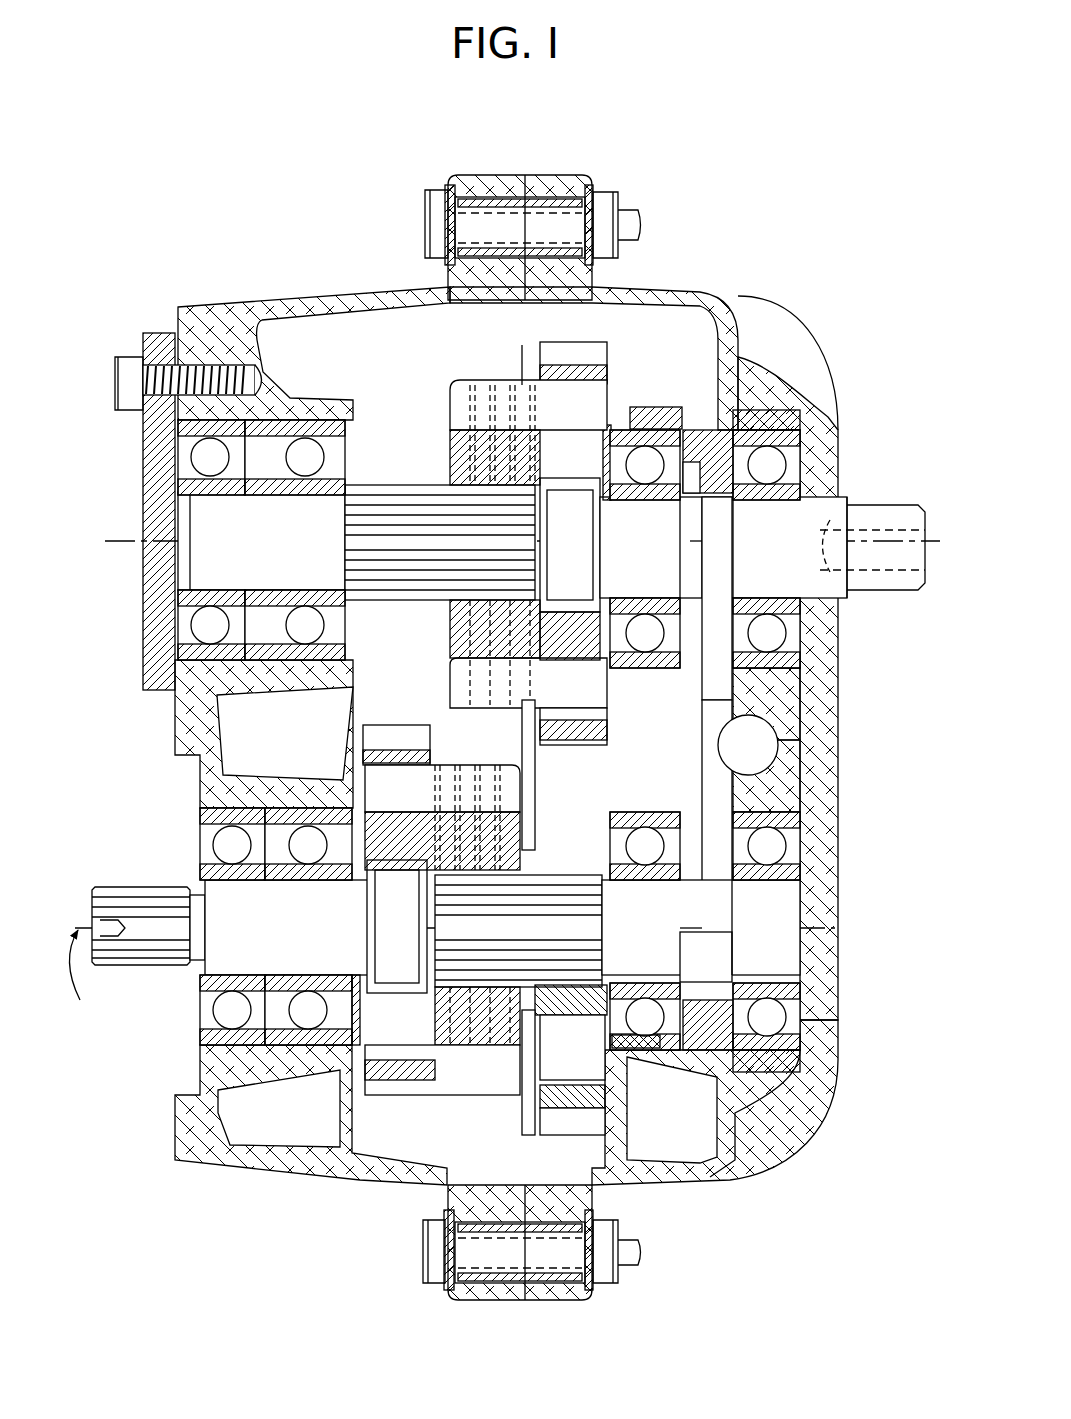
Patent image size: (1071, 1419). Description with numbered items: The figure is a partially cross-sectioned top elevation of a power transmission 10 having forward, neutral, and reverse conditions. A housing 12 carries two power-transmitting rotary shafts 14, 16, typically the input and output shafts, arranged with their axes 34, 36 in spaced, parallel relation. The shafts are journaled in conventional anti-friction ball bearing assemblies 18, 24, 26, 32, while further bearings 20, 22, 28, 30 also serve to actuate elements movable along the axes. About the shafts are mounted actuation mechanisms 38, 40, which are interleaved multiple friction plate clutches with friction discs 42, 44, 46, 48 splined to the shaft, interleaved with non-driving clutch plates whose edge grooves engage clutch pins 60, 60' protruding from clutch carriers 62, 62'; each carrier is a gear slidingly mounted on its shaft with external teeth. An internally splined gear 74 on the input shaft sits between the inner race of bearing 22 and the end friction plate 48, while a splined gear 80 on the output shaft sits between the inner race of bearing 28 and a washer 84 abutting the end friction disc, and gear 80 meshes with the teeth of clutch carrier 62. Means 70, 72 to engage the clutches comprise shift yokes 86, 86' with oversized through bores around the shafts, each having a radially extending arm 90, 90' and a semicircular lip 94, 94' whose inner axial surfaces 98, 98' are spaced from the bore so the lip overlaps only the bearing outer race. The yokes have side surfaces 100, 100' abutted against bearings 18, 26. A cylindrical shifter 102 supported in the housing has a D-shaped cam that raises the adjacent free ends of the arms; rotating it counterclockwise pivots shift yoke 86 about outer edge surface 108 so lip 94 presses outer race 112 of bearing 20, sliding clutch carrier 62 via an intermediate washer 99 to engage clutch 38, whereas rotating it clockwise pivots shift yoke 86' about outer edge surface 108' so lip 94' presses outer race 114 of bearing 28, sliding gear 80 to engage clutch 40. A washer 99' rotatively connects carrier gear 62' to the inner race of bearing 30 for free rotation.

The power transmission 10 is at (490, 170).
The housing 12 is at (712, 312).
The rotary shaft 14 is at (845, 578).
The rotary shaft 16 is at (240, 958).
The anti-friction bearing assembly 18 is at (812, 432).
The bearing 20 is at (740, 425).
The bearing 22 is at (300, 428).
The anti-friction bearing assembly 24 is at (176, 474).
The anti-friction bearing assembly 26 is at (785, 870).
The bearing 28 is at (675, 1040).
The bearing 30 is at (295, 1048).
The anti-friction bearing assembly 32 is at (198, 862).
The axis 34 is at (112, 538).
The axis 36 is at (93, 977).
The actuation mechanism 38 is at (450, 382).
The actuation mechanism 40 is at (470, 1098).
The friction disc 42 is at (532, 432).
The friction disc 44 is at (495, 403).
The friction disc 46 is at (490, 428).
The friction disc 48 is at (455, 432).
The clutch pin 60 is at (566, 542).
The clutch pin 60' is at (409, 967).
The clutch carrier 62 is at (562, 652).
The clutch carrier 62' is at (442, 1075).
The means to engage clutch mechanism 70 is at (708, 678).
The means to engage clutch mechanism 72 is at (706, 790).
The gear 74 is at (348, 612).
The gear 80 is at (595, 1100).
The washer 84 is at (537, 1018).
The shift yoke 86 is at (746, 426).
The shift yoke 86' is at (735, 1076).
The arm 90 is at (794, 704).
The arm 90' is at (804, 776).
The lip 94 is at (737, 547).
The lip 94' is at (782, 957).
The inner axial surface 98 is at (736, 535).
The inner axial surface 98' is at (729, 945).
The intermediate washer 99 is at (637, 433).
The washer 99' is at (327, 1053).
The side surface 100 is at (790, 547).
The side surface 100' is at (760, 927).
The cylindrical shifter 102 is at (760, 746).
The outer edge surface 108 is at (766, 391).
The outer edge surface 108' is at (772, 1090).
The outer race 112 is at (645, 432).
The outer race 114 is at (640, 1052).